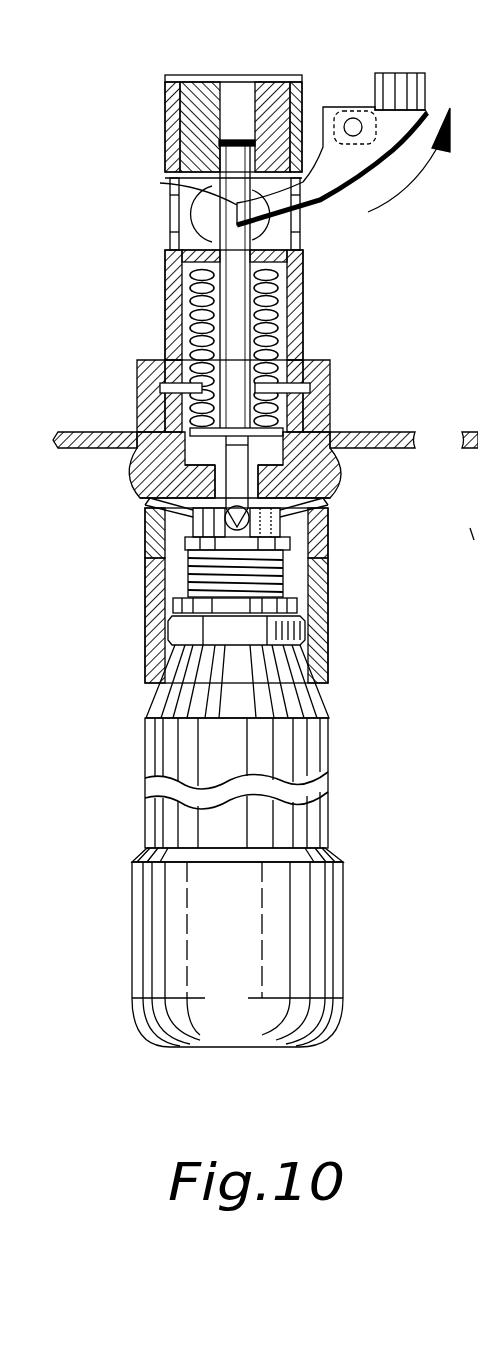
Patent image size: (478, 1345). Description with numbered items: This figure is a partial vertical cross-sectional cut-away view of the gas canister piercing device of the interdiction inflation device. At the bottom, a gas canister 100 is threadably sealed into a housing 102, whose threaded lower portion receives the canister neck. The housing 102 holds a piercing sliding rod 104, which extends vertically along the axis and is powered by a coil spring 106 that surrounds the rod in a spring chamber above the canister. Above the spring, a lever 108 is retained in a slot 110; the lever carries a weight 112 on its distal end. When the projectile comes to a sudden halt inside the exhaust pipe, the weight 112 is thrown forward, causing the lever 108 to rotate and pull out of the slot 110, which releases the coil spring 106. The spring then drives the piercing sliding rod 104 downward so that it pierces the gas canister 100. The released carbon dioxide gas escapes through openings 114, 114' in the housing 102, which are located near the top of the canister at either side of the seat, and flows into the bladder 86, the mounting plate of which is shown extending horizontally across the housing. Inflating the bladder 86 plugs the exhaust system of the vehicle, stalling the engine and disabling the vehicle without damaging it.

The gas canister 100 is at (278, 952).
The housing 102 is at (477, 603).
The piercing sliding rod 104 is at (232, 378).
The coil spring 106 is at (287, 313).
The lever 108 is at (327, 183).
The slot 110 is at (172, 183).
The weight 112 is at (397, 83).
The opening 114 is at (121, 517).
The opening 114' is at (352, 499).
The bladder 86 is at (365, 428).